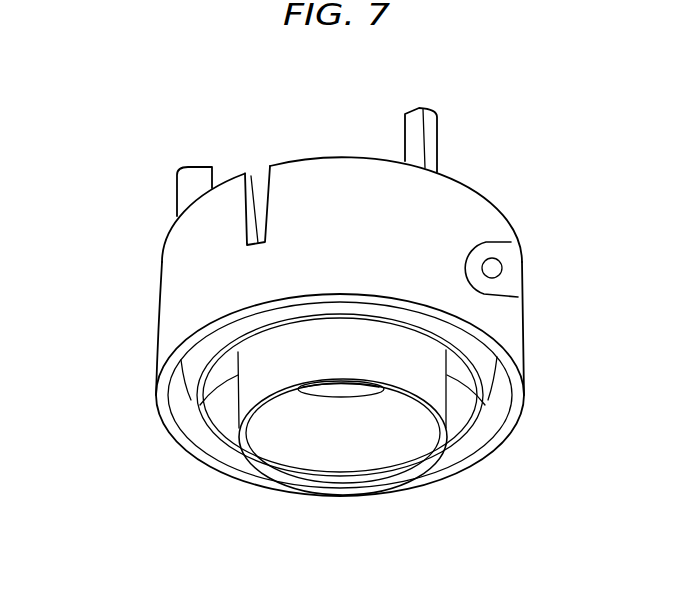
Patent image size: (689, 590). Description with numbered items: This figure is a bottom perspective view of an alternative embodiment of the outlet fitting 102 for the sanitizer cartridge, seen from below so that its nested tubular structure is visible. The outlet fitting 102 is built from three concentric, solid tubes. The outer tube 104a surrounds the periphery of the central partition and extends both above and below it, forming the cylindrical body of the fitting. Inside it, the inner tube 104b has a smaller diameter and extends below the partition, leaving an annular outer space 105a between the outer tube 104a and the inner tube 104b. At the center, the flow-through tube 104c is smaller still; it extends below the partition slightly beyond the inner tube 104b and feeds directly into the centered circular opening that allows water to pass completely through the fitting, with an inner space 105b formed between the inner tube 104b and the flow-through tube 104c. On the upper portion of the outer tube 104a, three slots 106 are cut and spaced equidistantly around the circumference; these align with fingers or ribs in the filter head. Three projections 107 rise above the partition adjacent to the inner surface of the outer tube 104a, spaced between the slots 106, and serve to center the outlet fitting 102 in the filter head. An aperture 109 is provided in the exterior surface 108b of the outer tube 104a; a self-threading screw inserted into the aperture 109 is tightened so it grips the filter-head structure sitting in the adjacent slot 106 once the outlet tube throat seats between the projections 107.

The outlet fitting 102 is at (126, 257).
The outer tube 104a is at (518, 403).
The inner tube 104b is at (476, 414).
The flow-through tube 104c is at (433, 448).
The outer space 105a is at (190, 418).
The inner space 105b is at (228, 408).
The slots 106 is at (260, 178).
The projections 107 is at (410, 105).
The exterior surface 108b is at (467, 202).
The aperture 109 is at (492, 268).